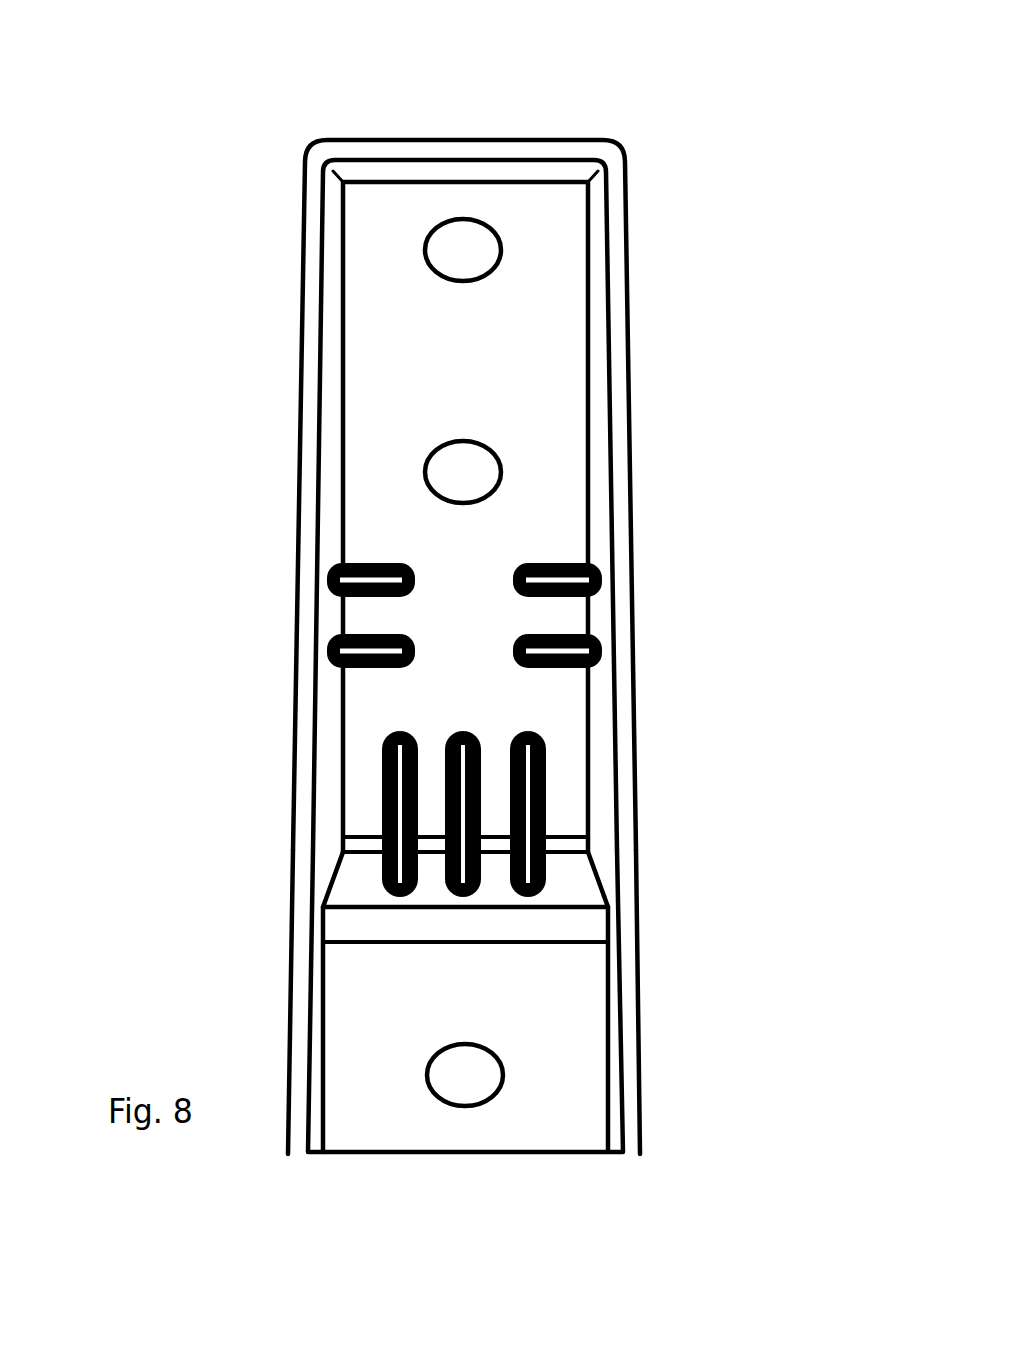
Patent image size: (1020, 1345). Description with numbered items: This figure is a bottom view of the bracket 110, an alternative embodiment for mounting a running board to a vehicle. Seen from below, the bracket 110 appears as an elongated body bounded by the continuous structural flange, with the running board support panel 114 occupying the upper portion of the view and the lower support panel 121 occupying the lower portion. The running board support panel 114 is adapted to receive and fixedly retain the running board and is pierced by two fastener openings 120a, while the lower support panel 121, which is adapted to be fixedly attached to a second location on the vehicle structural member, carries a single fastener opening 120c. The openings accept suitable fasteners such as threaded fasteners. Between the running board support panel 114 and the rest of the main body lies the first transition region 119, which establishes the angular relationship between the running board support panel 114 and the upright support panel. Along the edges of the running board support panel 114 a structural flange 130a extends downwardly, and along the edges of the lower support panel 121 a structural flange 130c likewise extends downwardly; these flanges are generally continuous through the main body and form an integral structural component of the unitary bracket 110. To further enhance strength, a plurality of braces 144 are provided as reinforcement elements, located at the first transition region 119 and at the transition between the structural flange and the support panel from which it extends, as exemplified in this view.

The bracket 110 is at (253, 146).
The running board support panel 114 is at (540, 327).
The first transition region 119 is at (570, 847).
The fastener openings 120a is at (427, 245).
The fastener opening 120c is at (437, 1092).
The lower support panel 121 is at (558, 1122).
The structural flange 130a is at (618, 440).
The structural flange 130c is at (632, 1003).
The braces 144 is at (375, 577).